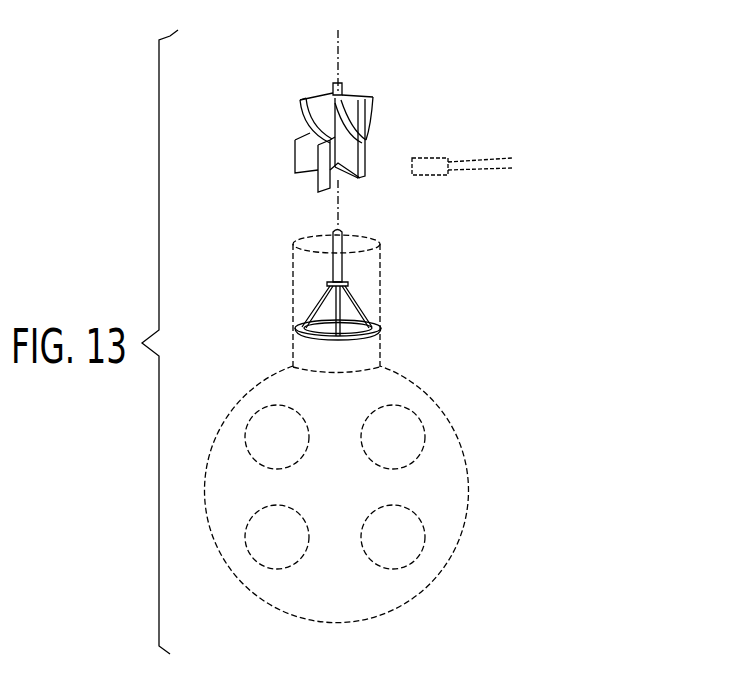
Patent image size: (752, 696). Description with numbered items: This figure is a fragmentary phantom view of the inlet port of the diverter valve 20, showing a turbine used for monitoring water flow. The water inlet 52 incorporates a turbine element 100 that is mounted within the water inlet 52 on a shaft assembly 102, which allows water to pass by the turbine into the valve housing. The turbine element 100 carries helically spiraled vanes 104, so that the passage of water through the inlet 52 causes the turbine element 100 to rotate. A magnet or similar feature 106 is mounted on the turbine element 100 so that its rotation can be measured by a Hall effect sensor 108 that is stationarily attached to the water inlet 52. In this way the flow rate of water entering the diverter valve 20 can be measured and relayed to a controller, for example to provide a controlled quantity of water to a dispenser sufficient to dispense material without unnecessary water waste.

The turbine element 100 is at (410, 86).
The helically spiraled vanes 104 is at (314, 102).
The magnet 106 is at (365, 157).
The Hall effect sensor 108 is at (432, 176).
The water inlet 52 is at (382, 300).
The shaft assembly 102 is at (334, 258).
The diverter valve 20 is at (465, 390).